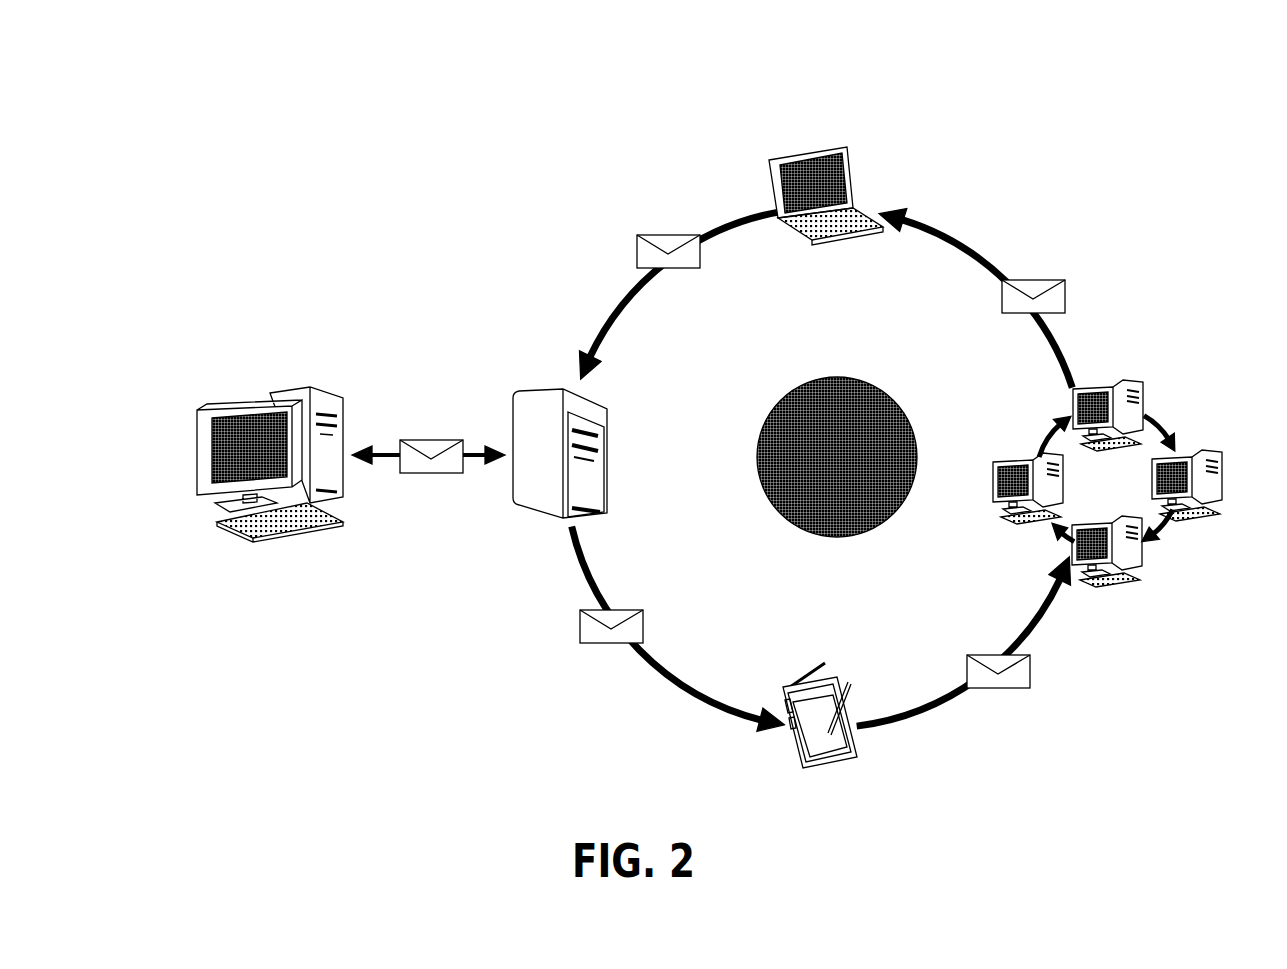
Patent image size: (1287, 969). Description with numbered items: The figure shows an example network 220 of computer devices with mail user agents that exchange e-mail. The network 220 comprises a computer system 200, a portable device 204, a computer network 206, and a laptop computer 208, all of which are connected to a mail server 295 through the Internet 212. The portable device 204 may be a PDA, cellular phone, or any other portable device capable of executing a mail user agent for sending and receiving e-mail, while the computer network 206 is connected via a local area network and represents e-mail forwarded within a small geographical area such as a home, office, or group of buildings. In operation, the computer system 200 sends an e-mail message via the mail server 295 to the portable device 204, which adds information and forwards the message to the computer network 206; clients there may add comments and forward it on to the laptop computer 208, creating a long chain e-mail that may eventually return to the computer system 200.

The network 220 is at (696, 62).
The computer system 200 is at (285, 393).
The mail server 295 is at (578, 403).
The Internet 212 is at (829, 381).
The laptop computer 208 is at (845, 172).
The computer network 206 is at (1160, 422).
The portable device 204 is at (857, 758).